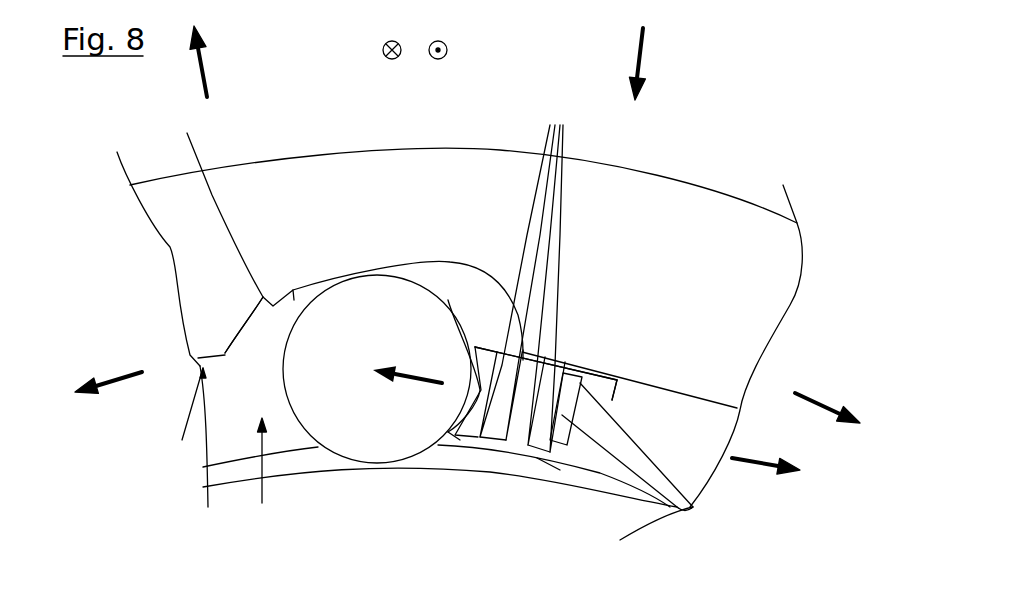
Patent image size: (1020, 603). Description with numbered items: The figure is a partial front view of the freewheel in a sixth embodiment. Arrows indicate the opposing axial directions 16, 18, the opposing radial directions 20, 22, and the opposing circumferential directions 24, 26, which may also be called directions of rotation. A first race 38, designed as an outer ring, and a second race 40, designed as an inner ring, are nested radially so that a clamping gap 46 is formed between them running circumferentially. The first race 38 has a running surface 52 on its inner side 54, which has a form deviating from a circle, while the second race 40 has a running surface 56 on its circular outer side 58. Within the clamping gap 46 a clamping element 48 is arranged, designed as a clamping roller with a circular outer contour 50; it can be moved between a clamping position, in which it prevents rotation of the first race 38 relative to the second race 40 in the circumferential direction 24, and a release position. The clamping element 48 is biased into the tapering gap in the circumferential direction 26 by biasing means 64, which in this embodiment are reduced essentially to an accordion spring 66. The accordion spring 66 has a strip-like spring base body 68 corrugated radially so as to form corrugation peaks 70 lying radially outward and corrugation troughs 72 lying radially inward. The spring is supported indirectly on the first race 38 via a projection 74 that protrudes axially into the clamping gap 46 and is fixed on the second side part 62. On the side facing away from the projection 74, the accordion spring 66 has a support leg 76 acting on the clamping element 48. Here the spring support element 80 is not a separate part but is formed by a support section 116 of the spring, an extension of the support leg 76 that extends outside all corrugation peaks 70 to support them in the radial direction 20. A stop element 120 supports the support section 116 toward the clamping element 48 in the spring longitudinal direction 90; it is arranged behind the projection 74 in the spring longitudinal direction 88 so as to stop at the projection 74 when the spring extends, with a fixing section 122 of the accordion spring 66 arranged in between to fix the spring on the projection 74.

The axial direction 16 is at (447, 52).
The axial direction 18 is at (381, 51).
The radial direction 20 is at (200, 76).
The radial direction 22 is at (643, 52).
The circumferential direction 24 is at (815, 408).
The circumferential direction 26 is at (123, 380).
The first race 38 is at (183, 193).
The second race 40 is at (228, 493).
The clamping gap 46 is at (263, 470).
The clamping element 48 is at (373, 437).
The outer contour 50 is at (323, 455).
The running surface 52 is at (215, 204).
The inner side 54 is at (171, 420).
The running surface 56 is at (223, 357).
The outer side 58 is at (223, 357).
The second side part 62 is at (217, 422).
The biasing means 64 is at (457, 440).
The accordion spring 66 is at (537, 458).
The spring base body 68 is at (450, 448).
The corrugation peaks 70 is at (526, 277).
The corrugation troughs 72 is at (540, 455).
The projection 74 is at (687, 507).
The support leg 76 is at (448, 300).
The spring support element 80 is at (577, 360).
The spring longitudinal direction 88 is at (758, 465).
The spring longitudinal direction 90 is at (423, 377).
The support section 116 is at (577, 360).
The stop element 120 is at (612, 400).
The fixing section 122 is at (707, 487).